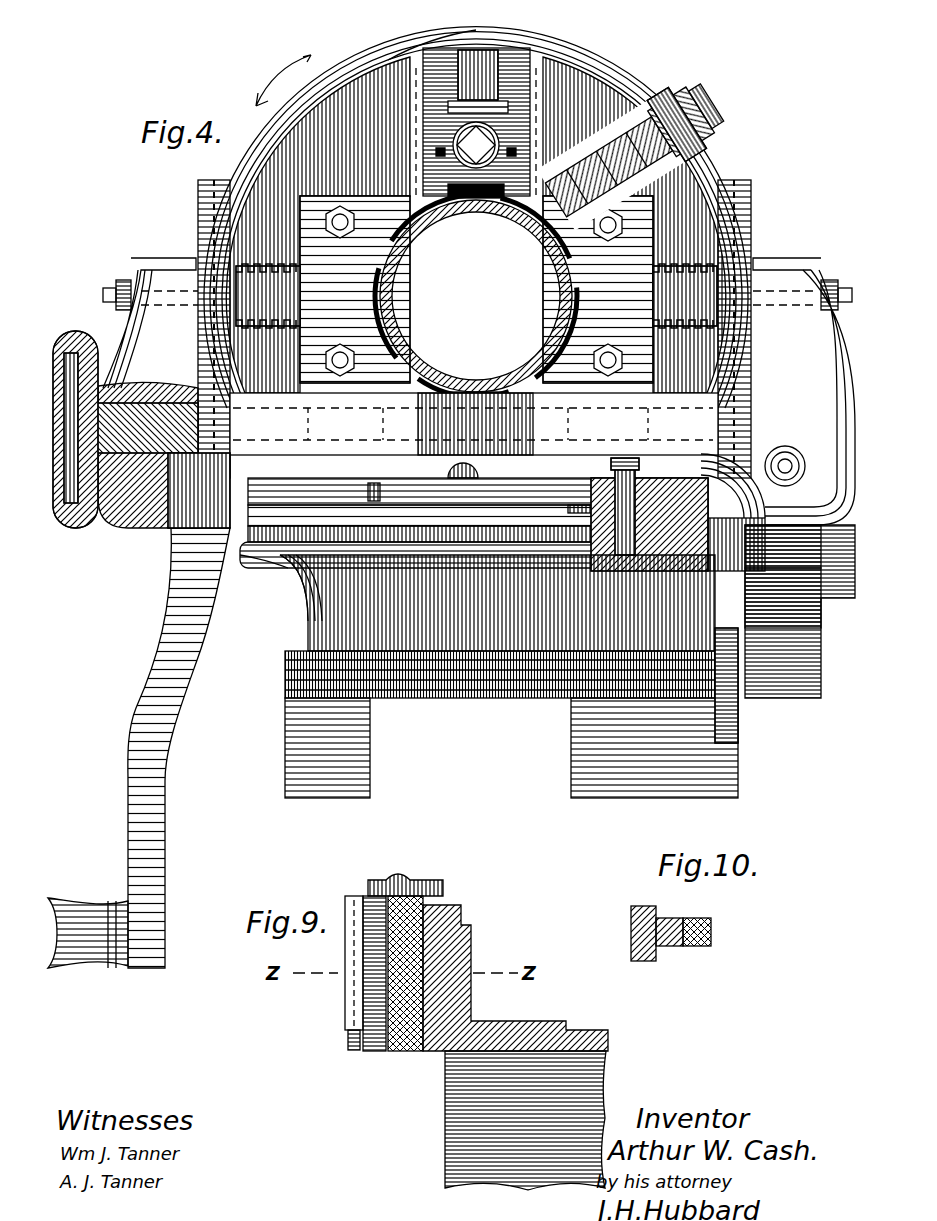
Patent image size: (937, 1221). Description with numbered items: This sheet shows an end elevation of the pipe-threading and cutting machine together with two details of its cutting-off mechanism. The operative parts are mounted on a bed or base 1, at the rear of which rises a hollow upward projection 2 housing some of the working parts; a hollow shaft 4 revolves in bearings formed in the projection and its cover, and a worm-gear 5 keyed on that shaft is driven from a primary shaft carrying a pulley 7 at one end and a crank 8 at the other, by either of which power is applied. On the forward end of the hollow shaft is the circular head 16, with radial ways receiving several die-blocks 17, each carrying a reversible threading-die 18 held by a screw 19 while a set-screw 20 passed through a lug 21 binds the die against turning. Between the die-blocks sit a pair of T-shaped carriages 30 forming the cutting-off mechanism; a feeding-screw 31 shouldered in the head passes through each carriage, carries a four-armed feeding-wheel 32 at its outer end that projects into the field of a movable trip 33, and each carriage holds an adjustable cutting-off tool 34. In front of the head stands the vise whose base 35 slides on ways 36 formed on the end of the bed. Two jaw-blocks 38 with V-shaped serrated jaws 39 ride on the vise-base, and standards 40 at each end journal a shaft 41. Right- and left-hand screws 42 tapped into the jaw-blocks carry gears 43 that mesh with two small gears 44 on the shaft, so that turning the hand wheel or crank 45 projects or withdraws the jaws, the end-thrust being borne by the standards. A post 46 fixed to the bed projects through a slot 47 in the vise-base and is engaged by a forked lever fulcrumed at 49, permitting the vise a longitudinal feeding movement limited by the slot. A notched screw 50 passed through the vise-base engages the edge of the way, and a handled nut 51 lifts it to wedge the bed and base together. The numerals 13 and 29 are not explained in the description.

In FIG. 4, the bed or base 1 is at (440, 680).
In FIG. 4, the hollow upward projection 2 is at (292, 628).
In FIG. 9, the hollow shaft 4 is at (574, 1022).
In FIG. 4, the worm-gear 5 is at (470, 142).
In FIG. 4, the pulley 7 is at (775, 690).
In FIG. 4, the crank 8 is at (150, 793).
In FIG. 4, the pin 13 is at (728, 645).
In FIG. 4, the circular head 16 is at (282, 154).
In FIG. 9, the circular head 16 is at (455, 998).
In FIG. 4, the die-block 17 is at (392, 42).
In FIG. 4, the threading-die 18 is at (412, 156).
In FIG. 4, the screw 19 is at (492, 130).
In FIG. 4, the set-screw 20 is at (438, 100).
In FIG. 4, the lug 21 is at (445, 72).
In FIG. 4, the ring 29 is at (268, 112).
In FIG. 4, the T-shaped carriage 30 is at (660, 136).
In FIG. 9, the T-shaped carriage 30 is at (362, 888).
In FIG. 10, the T-shaped carriage 30 is at (663, 912).
In FIG. 4, the feeding-screw 31 is at (655, 92).
In FIG. 9, the feeding-screw 31 is at (425, 902).
In FIG. 10, the feeding-screw 31 is at (703, 934).
In FIG. 4, the four-armed feeding-wheel 32 is at (690, 118).
In FIG. 9, the four-armed feeding-wheel 32 is at (418, 872).
In FIG. 4, the movable trip 33 is at (298, 596).
In FIG. 4, the adjustable tool 34 is at (640, 68).
In FIG. 9, the adjustable tool 34 is at (340, 1038).
In FIG. 10, the adjustable tool 34 is at (623, 918).
In FIG. 4, the vise-base 35 is at (474, 513).
In FIG. 4, the ways 36 is at (290, 560).
In FIG. 4, the jaw-block 38 is at (296, 345).
In FIG. 4, the jaw 39 is at (348, 210).
In FIG. 4, the standard 40 is at (130, 306).
In FIG. 4, the shaft 41 is at (118, 500).
In FIG. 4, the screw 42 is at (312, 262).
In FIG. 4, the gear 43 is at (190, 188).
In FIG. 4, the small gear 44 is at (152, 520).
In FIG. 4, the hand wheel or crank 45 is at (68, 520).
In FIG. 4, the post 46 is at (605, 490).
In FIG. 4, the slot 47 is at (365, 482).
In FIG. 4, the fulcrum 49 is at (442, 468).
In FIG. 4, the screw 50 is at (745, 530).
In FIG. 4, the handled nut 51 is at (785, 444).